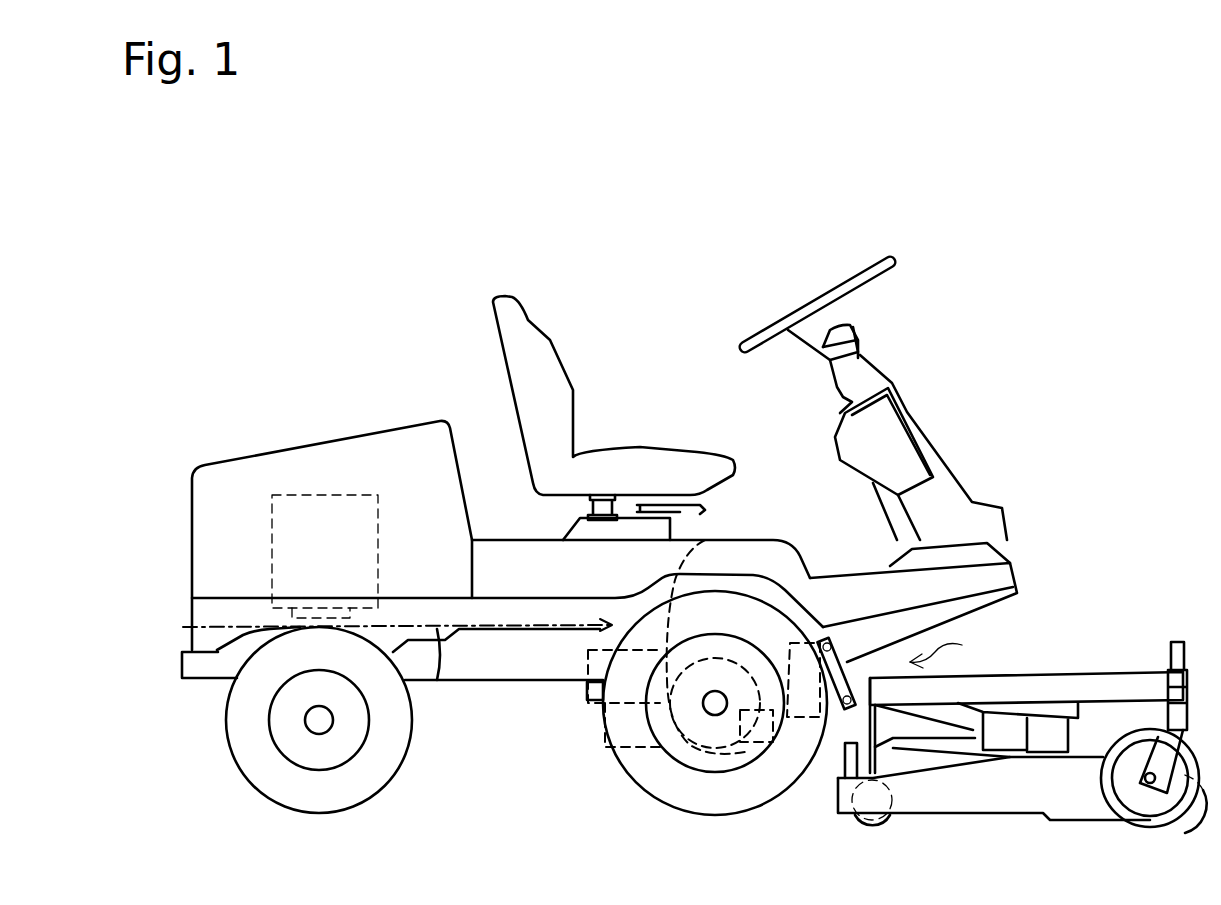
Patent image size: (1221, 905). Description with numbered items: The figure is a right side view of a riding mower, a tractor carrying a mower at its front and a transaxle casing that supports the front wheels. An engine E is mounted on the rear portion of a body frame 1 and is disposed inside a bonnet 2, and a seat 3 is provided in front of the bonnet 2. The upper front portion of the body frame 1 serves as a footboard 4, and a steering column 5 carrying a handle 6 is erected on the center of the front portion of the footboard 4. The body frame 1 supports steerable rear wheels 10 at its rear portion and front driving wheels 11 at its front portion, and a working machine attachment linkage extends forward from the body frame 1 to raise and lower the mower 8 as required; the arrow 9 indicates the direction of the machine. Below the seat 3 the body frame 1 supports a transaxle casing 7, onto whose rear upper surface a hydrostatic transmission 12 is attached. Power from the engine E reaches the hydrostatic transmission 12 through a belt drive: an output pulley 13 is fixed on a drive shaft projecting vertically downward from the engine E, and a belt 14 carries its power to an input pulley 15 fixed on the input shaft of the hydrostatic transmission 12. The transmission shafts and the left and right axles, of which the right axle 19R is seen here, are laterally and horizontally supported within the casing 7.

The body frame 1 is at (210, 668).
The bonnet 2 is at (228, 462).
The seat 3 is at (528, 327).
The footboard 4 is at (847, 578).
The steering column 5 is at (938, 477).
The handle 6 is at (868, 260).
The transaxle casing 7 is at (640, 747).
The mower 8 is at (1128, 632).
The forward travelling direction 9 is at (948, 650).
The rear wheel 10 is at (235, 747).
The front driving wheel 11 is at (617, 766).
The hydrostatic transmission (HST) 12 is at (587, 688).
The output pulley 13 is at (183, 627).
The belt 14 is at (437, 682).
The input pulley 15 is at (705, 540).
The right axle 19R is at (715, 703).
The engine E is at (338, 495).